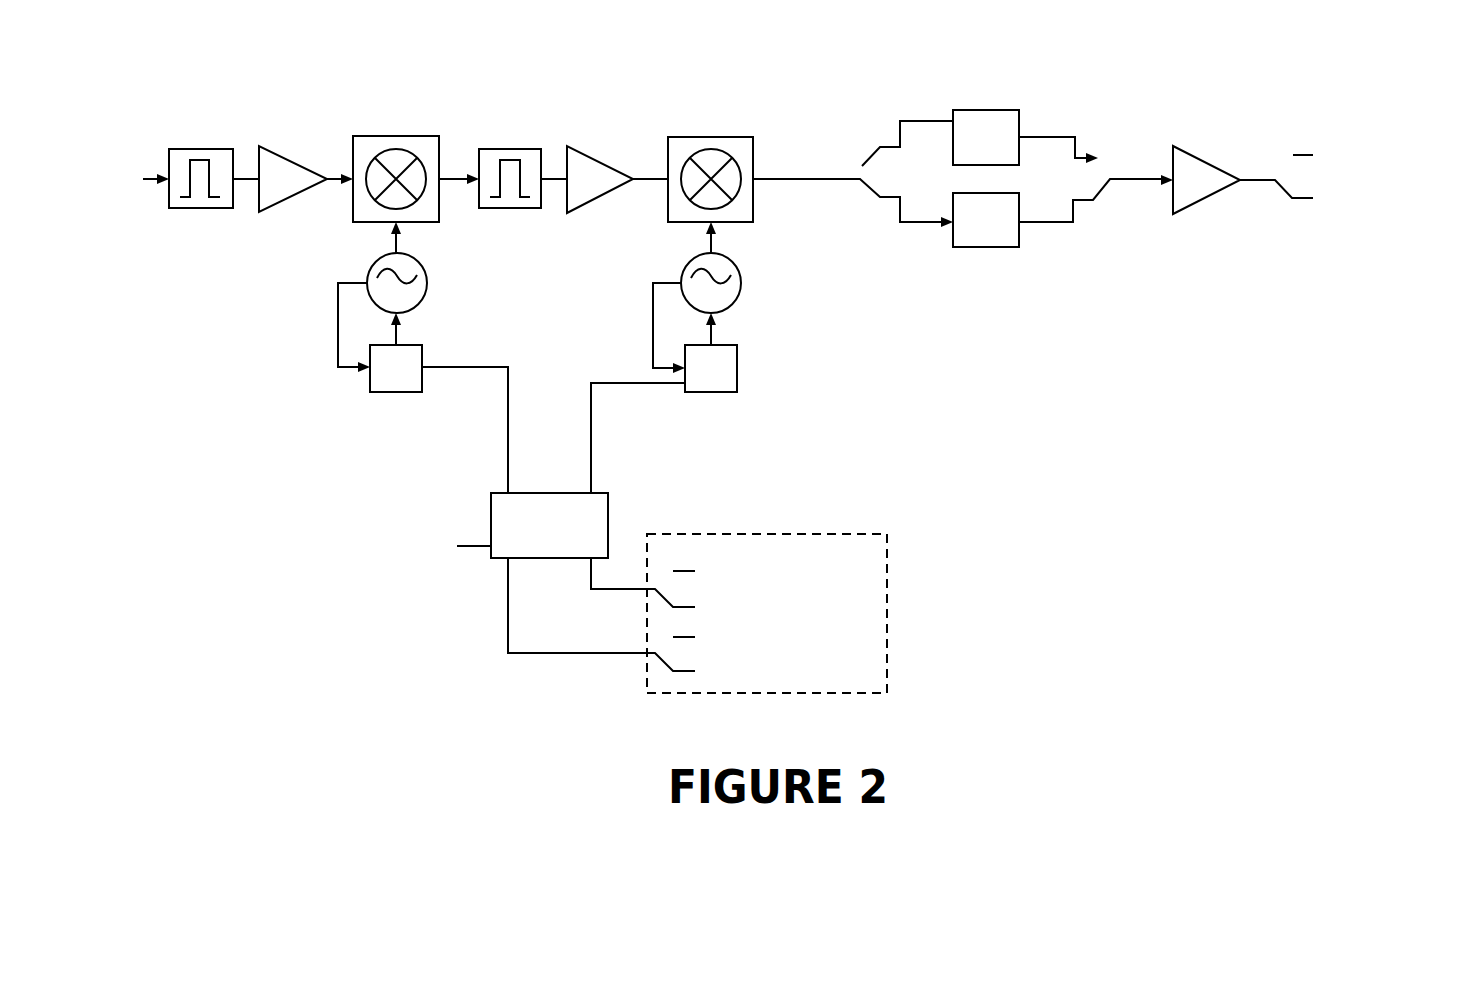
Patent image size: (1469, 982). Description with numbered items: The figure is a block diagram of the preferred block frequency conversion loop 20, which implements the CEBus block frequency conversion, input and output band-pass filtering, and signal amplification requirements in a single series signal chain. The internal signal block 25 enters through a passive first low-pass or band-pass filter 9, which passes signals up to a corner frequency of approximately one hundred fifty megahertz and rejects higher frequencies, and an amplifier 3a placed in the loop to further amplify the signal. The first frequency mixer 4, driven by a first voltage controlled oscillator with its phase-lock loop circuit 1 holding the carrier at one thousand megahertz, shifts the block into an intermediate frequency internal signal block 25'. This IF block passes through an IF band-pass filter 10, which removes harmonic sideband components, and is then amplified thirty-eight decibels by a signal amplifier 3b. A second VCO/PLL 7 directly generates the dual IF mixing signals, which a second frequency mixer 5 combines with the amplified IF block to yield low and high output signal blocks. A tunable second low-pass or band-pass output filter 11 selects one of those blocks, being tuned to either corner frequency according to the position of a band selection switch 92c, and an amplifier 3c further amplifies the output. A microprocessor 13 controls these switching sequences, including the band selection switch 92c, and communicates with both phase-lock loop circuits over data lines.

The block frequency conversion loop 20 is at (770, 356).
The first low-pass or band-pass filter 9 is at (185, 181).
The internal signal block 25 is at (143, 177).
The amplifier 3a is at (293, 189).
The first frequency mixer 4 is at (391, 167).
The intermediate frequency internal signal block 25' is at (459, 166).
The IF band-pass filter 10 is at (540, 139).
The signal amplifier 3b is at (604, 184).
The second frequency mixer 5 is at (724, 168).
The second low-pass or band-pass output filter 11 is at (1027, 178).
The amplifier 3c is at (1243, 192).
The first VCO/PLL circuit 1 is at (403, 355).
The second VCO/PLL 7 is at (868, 355).
The microprocessor 13 is at (549, 511).
The band selection switch 92c is at (788, 613).